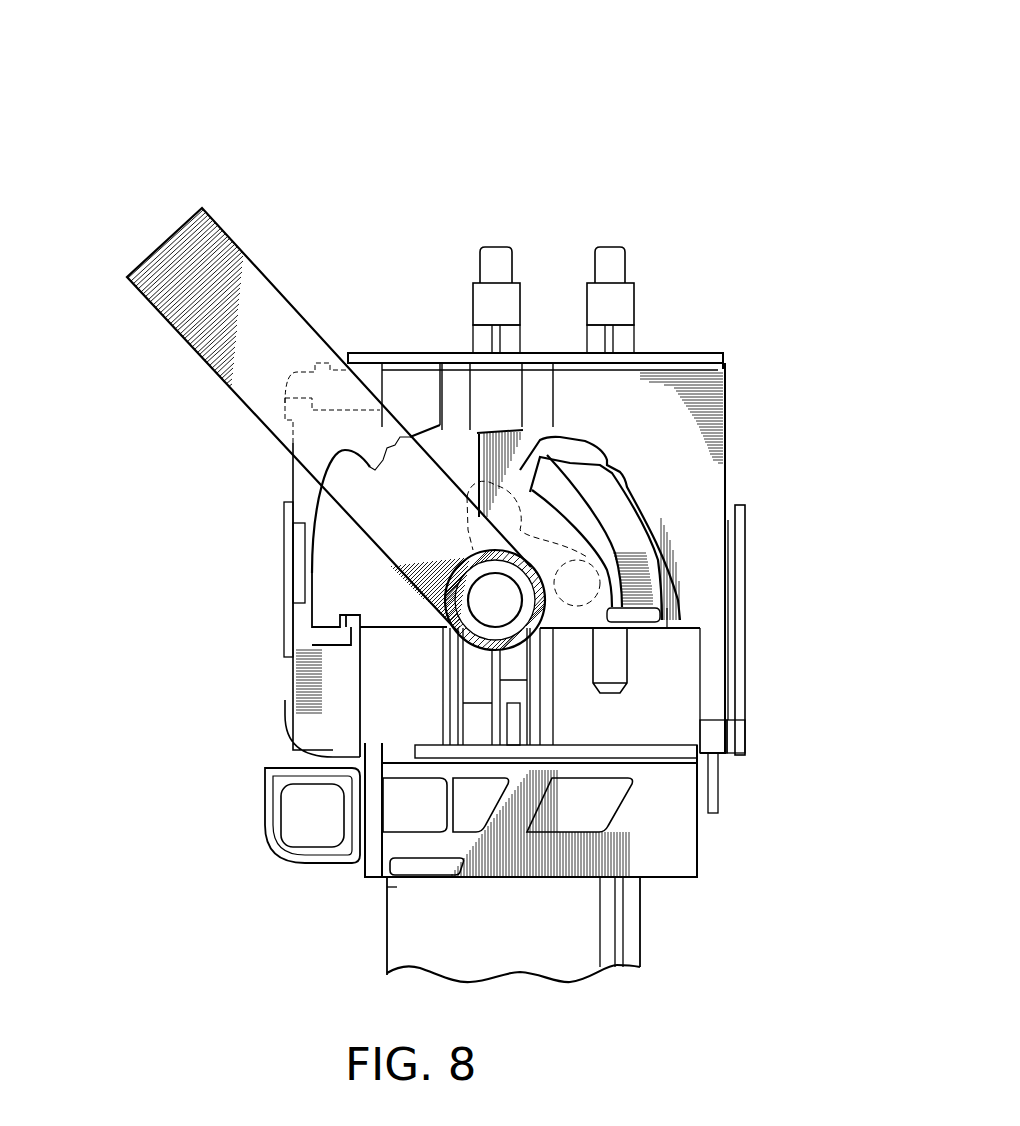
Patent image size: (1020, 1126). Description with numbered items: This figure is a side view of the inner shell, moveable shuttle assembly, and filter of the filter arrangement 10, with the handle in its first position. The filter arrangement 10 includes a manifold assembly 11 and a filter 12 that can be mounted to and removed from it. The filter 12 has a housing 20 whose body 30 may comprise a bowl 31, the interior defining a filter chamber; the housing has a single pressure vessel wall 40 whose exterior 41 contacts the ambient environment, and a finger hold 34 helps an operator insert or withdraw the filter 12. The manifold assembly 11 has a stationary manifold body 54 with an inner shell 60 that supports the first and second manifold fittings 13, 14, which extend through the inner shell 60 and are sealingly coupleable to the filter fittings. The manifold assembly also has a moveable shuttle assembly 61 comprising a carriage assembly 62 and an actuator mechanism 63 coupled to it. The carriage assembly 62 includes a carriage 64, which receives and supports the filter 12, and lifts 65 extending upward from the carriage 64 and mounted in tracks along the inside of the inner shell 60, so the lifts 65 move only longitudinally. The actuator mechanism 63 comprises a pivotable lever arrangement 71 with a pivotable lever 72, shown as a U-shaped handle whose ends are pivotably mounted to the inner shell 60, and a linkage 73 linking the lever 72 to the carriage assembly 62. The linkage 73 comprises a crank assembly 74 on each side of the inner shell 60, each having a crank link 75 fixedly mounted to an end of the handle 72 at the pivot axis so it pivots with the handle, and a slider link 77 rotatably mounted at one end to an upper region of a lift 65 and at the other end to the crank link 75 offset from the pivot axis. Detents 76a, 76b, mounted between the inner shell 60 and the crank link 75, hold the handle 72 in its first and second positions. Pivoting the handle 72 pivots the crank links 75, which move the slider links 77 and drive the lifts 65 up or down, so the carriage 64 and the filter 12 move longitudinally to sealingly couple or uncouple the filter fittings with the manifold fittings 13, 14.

The filter arrangement 10 is at (665, 132).
The manifold assembly 11 is at (700, 372).
The filter 12 is at (635, 950).
The first manifold fitting 13 is at (615, 265).
The second manifold fitting 14 is at (493, 272).
The housing 20 is at (385, 887).
The body 30 is at (397, 918).
The bowl 31 is at (398, 960).
The finger hold 34 is at (268, 800).
The pressure vessel wall 40 is at (590, 898).
The exterior of the pressure vessel wall 41 is at (590, 930).
The manifold body 54 is at (640, 378).
The inner shell 60 is at (685, 398).
The shuttle assembly 61 is at (487, 448).
The carriage assembly 62 is at (670, 790).
The actuator mechanism 63 is at (175, 283).
The carriage 64 is at (685, 865).
The lift 65 is at (553, 717).
The pivotable lever arrangement 71 is at (218, 325).
The pivotable lever 72 is at (267, 408).
The linkage 73 is at (545, 447).
The crank assembly 74 is at (590, 552).
The crank link 75 is at (588, 610).
The detent 76a is at (628, 466).
The detent 76b is at (367, 466).
The slider link 77 is at (547, 545).